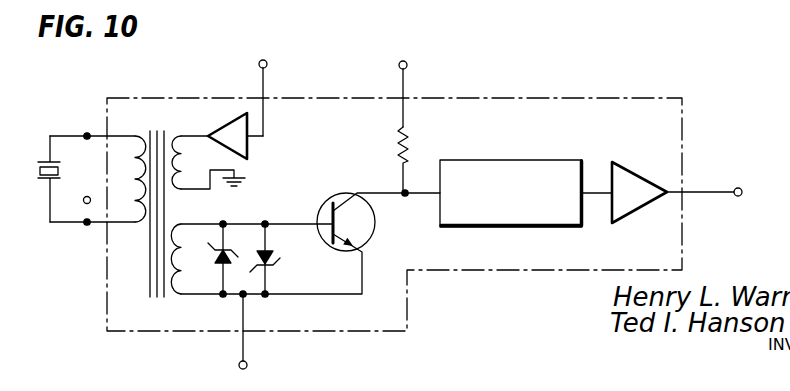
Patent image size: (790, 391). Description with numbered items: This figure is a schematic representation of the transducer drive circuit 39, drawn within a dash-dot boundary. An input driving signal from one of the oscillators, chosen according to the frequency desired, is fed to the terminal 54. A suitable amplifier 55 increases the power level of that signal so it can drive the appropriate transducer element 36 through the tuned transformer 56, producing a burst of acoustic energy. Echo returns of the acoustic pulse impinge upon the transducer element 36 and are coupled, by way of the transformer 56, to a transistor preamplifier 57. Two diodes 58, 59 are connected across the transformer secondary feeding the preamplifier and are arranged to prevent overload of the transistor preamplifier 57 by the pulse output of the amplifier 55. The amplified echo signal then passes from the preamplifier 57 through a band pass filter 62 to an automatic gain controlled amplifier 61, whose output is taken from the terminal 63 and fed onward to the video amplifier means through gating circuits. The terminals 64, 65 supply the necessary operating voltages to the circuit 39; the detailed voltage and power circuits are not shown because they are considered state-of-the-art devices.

The transducer element 36 is at (30, 168).
The transducer drive circuit 39 is at (480, 90).
The terminal 54 is at (284, 55).
The amplifier 55 is at (217, 129).
The tuned transformer 56 is at (148, 265).
The transistor preamplifier 57 is at (352, 194).
The diode 58 is at (211, 256).
The diode 59 is at (278, 249).
The automatic gain controlled amplifier 61 is at (657, 150).
The band pass filter 62 is at (581, 159).
The terminal 63 is at (762, 167).
The terminal 64 is at (250, 366).
The terminal 65 is at (400, 64).